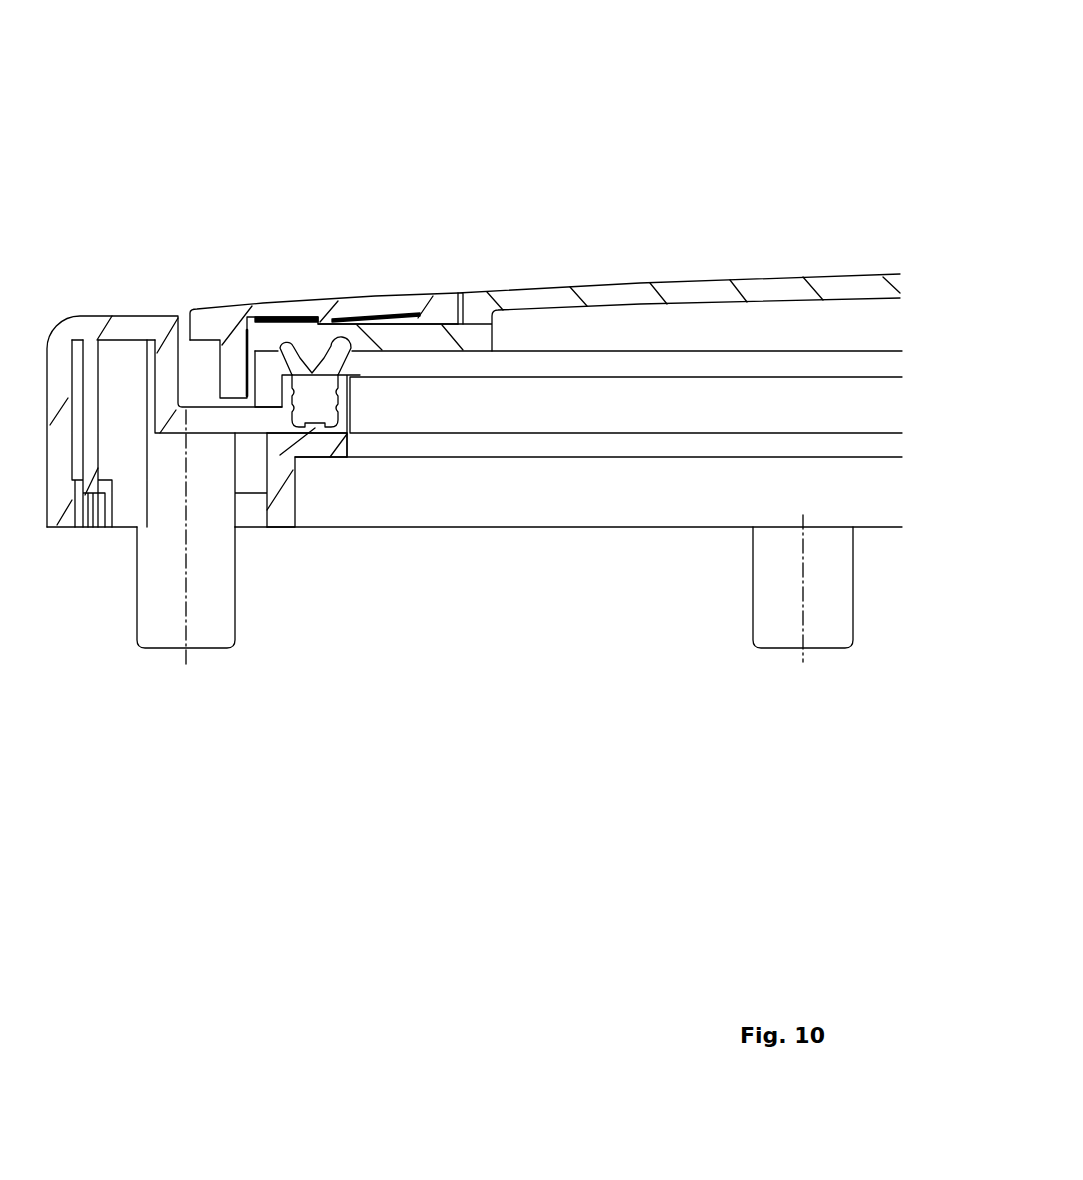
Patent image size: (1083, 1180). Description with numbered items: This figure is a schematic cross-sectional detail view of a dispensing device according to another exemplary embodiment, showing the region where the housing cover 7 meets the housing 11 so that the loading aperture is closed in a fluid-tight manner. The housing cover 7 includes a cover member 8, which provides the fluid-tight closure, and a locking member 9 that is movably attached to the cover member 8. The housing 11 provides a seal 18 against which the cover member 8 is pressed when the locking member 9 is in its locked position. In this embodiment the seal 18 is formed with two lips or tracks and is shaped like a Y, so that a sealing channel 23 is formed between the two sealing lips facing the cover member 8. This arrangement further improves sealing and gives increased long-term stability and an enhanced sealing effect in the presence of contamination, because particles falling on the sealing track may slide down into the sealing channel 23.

The housing cover 7 is at (625, 262).
The cover member 8 is at (428, 343).
The locking member 9 is at (230, 305).
The housing 11 is at (275, 508).
The seal 18 is at (311, 388).
The sealing channel 23 is at (312, 362).